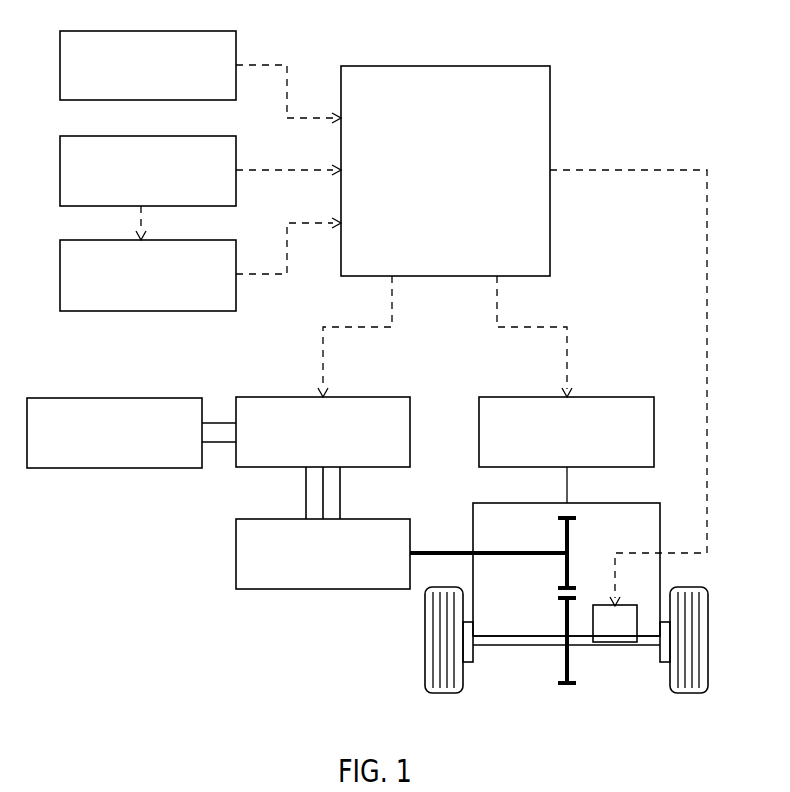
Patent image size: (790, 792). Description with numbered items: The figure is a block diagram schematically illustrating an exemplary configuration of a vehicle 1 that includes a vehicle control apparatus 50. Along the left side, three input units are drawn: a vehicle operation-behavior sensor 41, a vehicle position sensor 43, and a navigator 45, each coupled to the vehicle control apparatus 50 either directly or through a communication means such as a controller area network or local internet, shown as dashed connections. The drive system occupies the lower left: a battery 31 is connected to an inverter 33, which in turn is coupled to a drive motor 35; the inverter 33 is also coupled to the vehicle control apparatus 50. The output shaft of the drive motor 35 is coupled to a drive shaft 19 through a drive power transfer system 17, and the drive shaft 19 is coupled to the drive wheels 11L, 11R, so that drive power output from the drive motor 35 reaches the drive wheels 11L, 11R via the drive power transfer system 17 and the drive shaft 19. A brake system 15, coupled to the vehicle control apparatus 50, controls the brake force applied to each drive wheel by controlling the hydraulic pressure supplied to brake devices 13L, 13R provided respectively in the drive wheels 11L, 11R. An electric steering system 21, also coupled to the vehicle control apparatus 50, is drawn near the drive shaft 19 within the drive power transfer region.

The vehicle 1 is at (702, 23).
The vehicle operation-behavior sensor 41 is at (183, 32).
The vehicle position sensor 43 is at (183, 137).
The navigator 45 is at (183, 241).
The vehicle control apparatus 50 is at (480, 67).
The battery 31 is at (166, 399).
The inverter 33 is at (375, 398).
The drive motor 35 is at (375, 520).
The brake system 15 is at (620, 398).
The drive power transfer system 17 is at (545, 589).
The drive shaft 19 is at (533, 642).
The electric steering system 21 is at (611, 632).
The brake device 13L is at (465, 658).
The brake device 13R is at (666, 658).
The drive wheel 11L is at (431, 690).
The drive wheel 11R is at (703, 690).